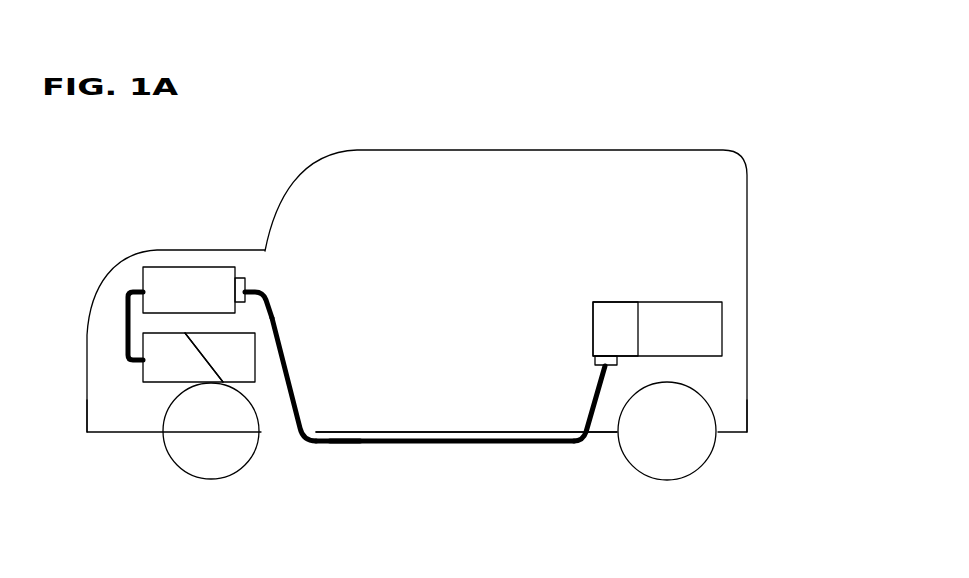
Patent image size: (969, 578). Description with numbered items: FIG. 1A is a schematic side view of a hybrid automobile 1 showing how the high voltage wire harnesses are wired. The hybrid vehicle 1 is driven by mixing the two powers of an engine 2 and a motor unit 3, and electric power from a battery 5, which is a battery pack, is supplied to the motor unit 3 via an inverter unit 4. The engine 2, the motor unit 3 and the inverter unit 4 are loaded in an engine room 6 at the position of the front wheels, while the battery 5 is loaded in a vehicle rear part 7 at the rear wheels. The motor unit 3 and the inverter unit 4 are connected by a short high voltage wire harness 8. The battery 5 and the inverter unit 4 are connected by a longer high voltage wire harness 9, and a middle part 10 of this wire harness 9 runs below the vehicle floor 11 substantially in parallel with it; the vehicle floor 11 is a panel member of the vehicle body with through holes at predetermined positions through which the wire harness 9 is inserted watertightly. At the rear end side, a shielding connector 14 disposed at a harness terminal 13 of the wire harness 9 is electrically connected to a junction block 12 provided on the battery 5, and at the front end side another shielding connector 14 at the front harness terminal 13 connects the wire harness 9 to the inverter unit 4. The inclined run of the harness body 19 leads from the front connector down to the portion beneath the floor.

The hybrid automobile 1 is at (472, 143).
The engine 2 is at (240, 367).
The motor unit 3 is at (167, 368).
The inverter unit 4 is at (173, 285).
The battery 5 is at (686, 318).
The engine room 6 is at (105, 403).
The vehicle rear part 7 is at (727, 393).
The high voltage wire harness 8 is at (122, 330).
The high voltage wire harness 9 is at (342, 446).
The middle part 10 is at (457, 446).
The vehicle floor 11 is at (527, 434).
The junction block 12 is at (617, 318).
The harness terminal 13 is at (268, 296).
The shielding connector 14 is at (247, 287).
The harness body 19 is at (305, 407).